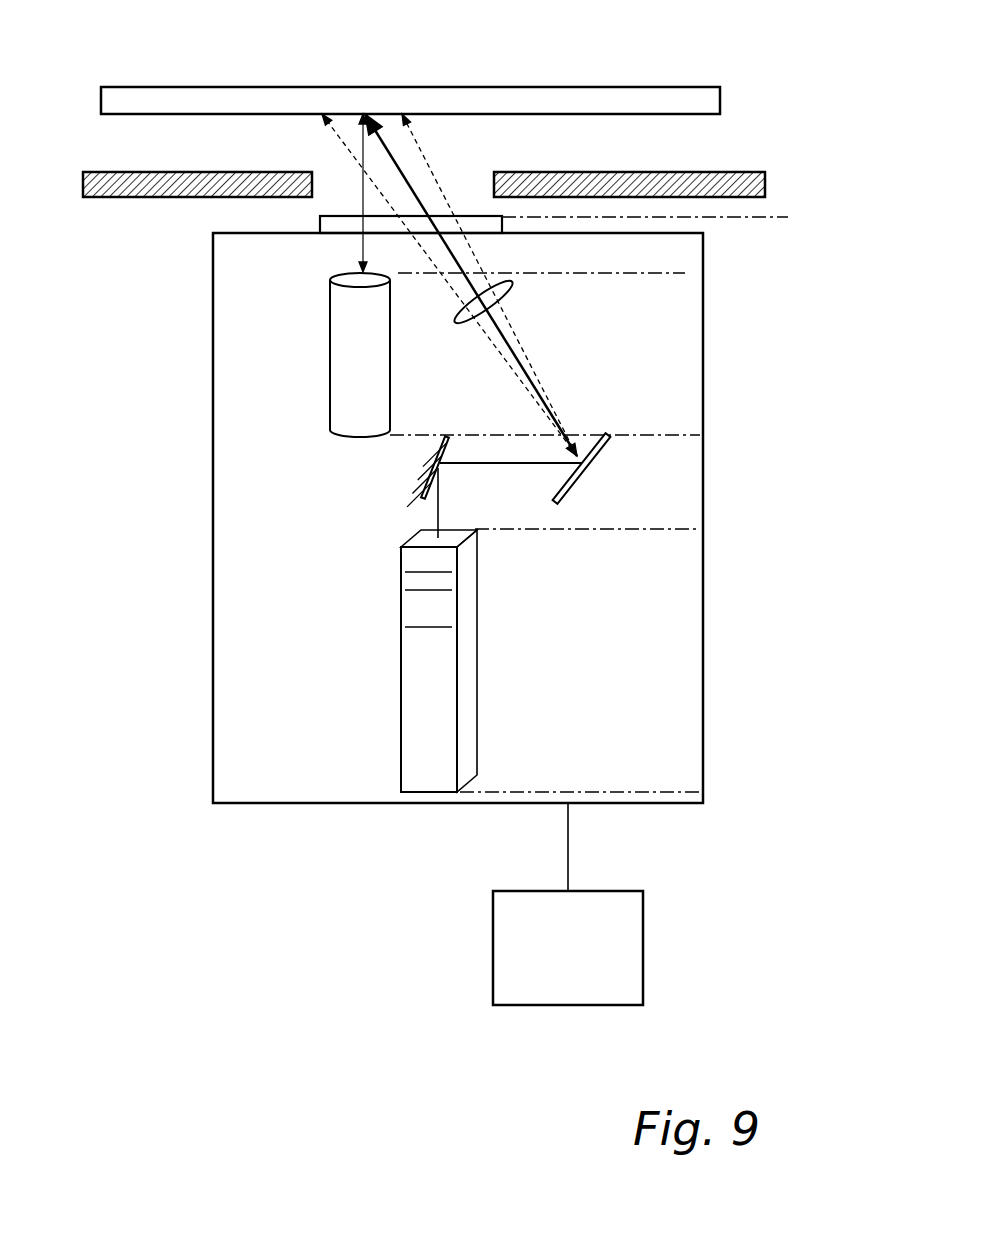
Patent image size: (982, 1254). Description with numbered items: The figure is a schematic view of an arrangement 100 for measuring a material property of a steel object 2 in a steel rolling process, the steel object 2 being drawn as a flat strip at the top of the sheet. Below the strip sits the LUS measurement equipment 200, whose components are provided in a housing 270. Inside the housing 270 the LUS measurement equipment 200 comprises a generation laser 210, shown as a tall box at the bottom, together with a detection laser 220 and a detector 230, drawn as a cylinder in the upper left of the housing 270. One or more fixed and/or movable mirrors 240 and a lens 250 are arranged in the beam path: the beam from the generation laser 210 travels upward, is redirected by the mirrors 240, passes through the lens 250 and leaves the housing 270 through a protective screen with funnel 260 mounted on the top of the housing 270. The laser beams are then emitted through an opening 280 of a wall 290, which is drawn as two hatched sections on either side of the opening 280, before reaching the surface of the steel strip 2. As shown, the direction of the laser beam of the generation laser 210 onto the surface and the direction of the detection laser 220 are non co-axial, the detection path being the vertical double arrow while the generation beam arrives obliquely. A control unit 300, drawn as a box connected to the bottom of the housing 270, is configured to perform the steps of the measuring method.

The steel object 2 is at (538, 102).
The arrangement 100 is at (763, 130).
The LUS measurement equipment 200 is at (458, 567).
The housing 270 is at (422, 804).
The generation laser 210 is at (467, 703).
The detection laser 220 is at (218, 275).
The detector 230 is at (342, 348).
The mirrors 240 is at (572, 487).
The lenses 250 is at (503, 290).
The protective screen with funnel 260 is at (318, 223).
The opening 280 is at (448, 172).
The wall 290 is at (705, 203).
The control unit 300 is at (643, 935).